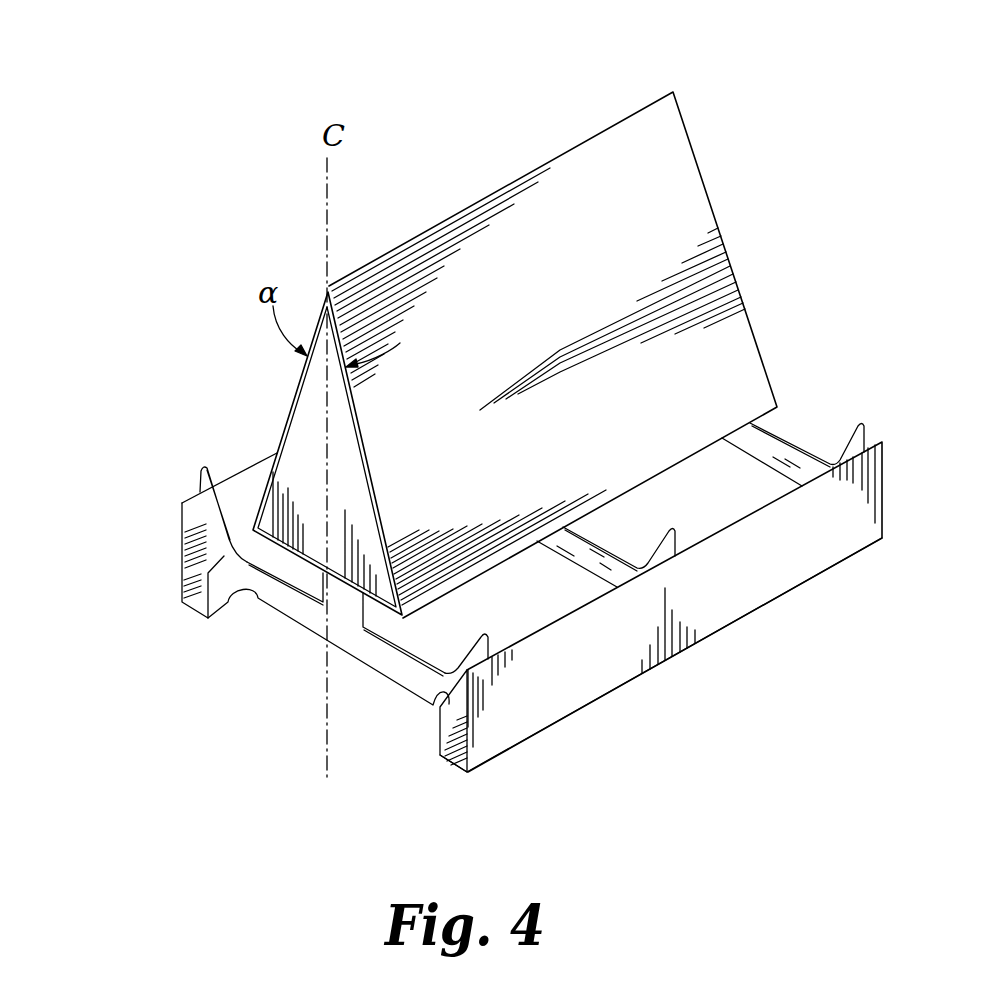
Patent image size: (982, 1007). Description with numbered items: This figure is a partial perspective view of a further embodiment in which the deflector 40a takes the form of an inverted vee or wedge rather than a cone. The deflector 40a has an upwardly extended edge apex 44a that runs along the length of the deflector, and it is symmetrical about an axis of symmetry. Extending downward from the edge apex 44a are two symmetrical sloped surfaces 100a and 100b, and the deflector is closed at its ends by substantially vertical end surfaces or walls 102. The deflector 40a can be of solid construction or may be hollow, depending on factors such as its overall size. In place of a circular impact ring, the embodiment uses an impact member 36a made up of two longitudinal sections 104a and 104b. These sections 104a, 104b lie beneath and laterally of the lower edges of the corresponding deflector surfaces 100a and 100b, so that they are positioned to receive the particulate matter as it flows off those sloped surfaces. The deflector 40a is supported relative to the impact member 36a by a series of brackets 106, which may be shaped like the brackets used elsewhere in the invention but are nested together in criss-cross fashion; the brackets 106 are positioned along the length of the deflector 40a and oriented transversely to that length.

The impact member 36a is at (283, 670).
The deflector 40a is at (268, 393).
The edge apex 44a is at (551, 143).
The sloped surface 100a is at (678, 203).
The sloped surface 100b is at (322, 312).
The end surface 102 is at (300, 442).
The longitudinal section 104a is at (440, 702).
The longitudinal section 104b is at (203, 525).
The bracket 106 is at (282, 593).